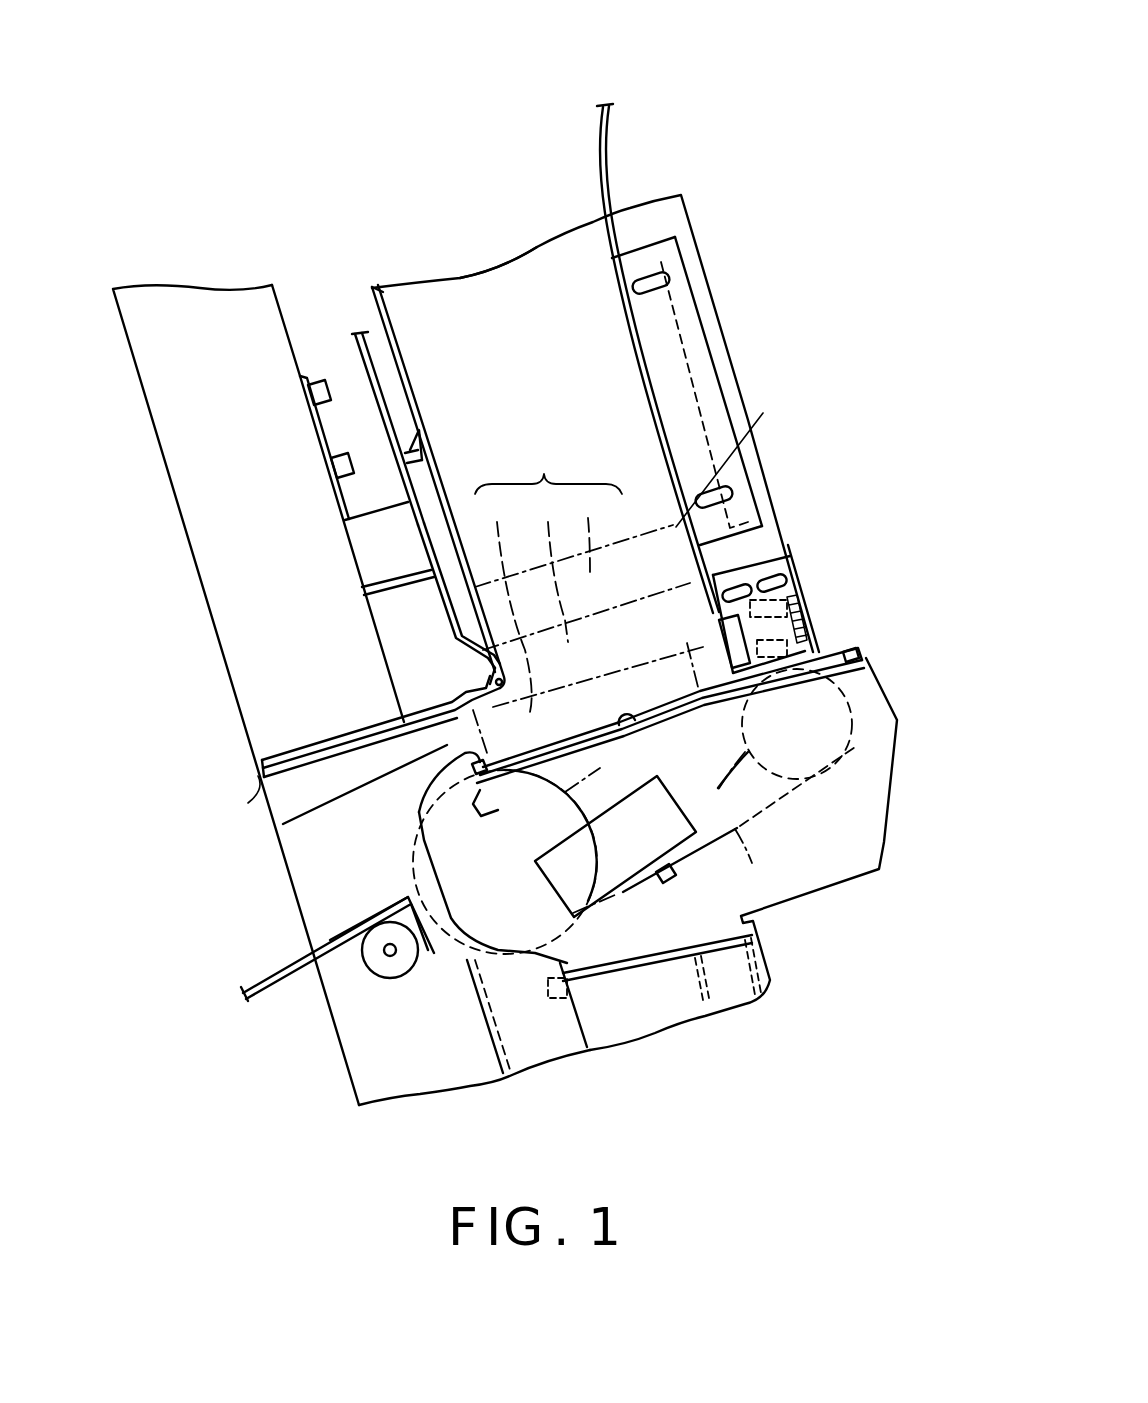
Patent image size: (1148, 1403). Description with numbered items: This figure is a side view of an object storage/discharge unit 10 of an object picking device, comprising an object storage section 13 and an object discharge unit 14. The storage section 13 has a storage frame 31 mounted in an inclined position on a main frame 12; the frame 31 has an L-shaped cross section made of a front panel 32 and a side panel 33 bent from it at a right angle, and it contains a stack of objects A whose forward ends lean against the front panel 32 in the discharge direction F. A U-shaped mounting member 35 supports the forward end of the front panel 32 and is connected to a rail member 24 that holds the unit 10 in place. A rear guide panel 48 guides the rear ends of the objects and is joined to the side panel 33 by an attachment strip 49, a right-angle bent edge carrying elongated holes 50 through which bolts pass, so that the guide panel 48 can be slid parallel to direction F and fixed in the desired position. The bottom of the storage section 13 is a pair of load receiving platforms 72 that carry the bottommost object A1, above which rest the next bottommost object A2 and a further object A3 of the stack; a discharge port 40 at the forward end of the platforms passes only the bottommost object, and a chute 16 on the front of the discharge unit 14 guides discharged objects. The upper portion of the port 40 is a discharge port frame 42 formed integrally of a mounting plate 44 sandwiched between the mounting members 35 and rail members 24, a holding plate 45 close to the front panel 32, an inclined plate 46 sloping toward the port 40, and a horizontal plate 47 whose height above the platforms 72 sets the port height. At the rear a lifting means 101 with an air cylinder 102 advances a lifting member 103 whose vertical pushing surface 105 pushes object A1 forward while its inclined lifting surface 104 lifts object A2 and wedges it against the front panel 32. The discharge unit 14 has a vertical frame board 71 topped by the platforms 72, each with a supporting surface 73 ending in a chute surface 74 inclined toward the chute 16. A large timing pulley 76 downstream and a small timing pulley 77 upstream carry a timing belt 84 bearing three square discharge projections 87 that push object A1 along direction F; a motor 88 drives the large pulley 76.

The object storage/discharge unit 10 is at (681, 145).
The main frame 12 is at (186, 280).
The object storage section 13 is at (546, 305).
The object discharge unit 14 is at (797, 862).
The chute 16 is at (267, 977).
The rail member 24 is at (367, 548).
The storage frame 31 is at (473, 262).
The front panel 32 is at (378, 292).
The side panel 33 is at (438, 300).
The mounting member 35 is at (420, 430).
The discharge port 40 is at (382, 745).
The discharge port frame 42 is at (345, 370).
The mounting plate 44 is at (446, 624).
The holding plate 45 is at (480, 668).
The inclined plate 46 is at (455, 703).
The horizontal plate 47 is at (280, 777).
The rear guide panel 48 is at (633, 378).
The attachment strip 49 is at (690, 304).
The elongated holes 50 is at (657, 272).
The frame board 71 is at (863, 848).
The load receiving platforms 72 is at (681, 728).
The supporting surface 73 is at (632, 730).
The chute surface 74 is at (411, 833).
The large timing pulley 76 is at (519, 855).
The small timing pulley 77 is at (778, 742).
The timing belt 84 is at (715, 829).
The discharge projections 87 is at (858, 660).
The motor 88 is at (617, 893).
The lifting means 101 is at (825, 586).
The air cylinder 102 is at (782, 630).
The lifting member 103 is at (762, 600).
The inclined lifting surface 104 is at (731, 607).
The vertical pushing surface 105 is at (720, 655).
The objects A is at (628, 568).
The bottommost object A1 is at (508, 603).
The next bottommost object A2 is at (551, 568).
The sheet path 3 A3 is at (591, 533).
The discharge direction F is at (450, 745).